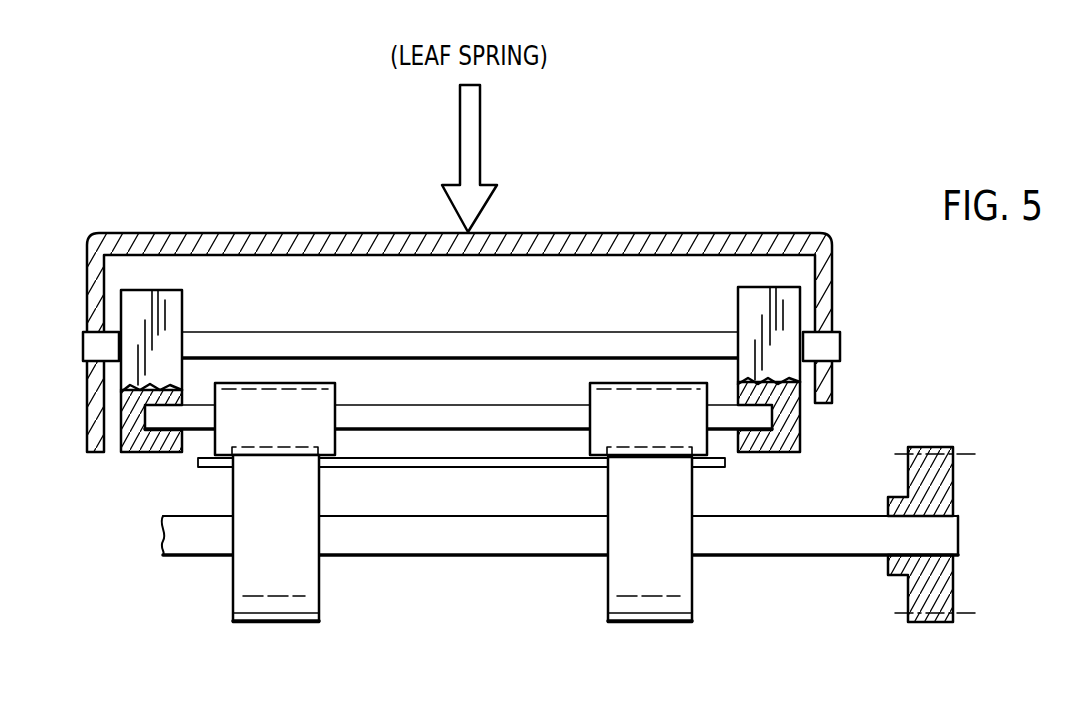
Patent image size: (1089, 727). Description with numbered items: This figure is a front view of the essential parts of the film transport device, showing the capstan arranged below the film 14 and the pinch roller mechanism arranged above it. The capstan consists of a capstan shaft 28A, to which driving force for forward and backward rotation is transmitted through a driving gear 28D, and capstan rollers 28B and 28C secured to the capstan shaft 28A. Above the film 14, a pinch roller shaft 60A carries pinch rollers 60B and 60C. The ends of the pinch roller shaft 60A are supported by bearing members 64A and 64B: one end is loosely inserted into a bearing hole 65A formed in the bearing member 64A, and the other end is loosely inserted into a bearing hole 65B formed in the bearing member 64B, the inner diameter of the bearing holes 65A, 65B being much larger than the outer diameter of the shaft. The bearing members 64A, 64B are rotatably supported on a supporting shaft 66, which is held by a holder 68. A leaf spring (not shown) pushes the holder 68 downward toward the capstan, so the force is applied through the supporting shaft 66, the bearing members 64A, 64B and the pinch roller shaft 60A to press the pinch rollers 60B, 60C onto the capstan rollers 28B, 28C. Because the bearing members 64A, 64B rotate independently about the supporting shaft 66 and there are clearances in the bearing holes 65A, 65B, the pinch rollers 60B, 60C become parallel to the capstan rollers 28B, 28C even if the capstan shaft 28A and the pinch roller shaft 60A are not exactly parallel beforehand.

The film 14 is at (220, 468).
The capstan shaft 28A is at (207, 557).
The capstan roller 28B is at (277, 608).
The capstan roller 28C is at (643, 607).
The driving gear 28D is at (953, 490).
The pinch roller shaft 60A is at (462, 405).
The pinch roller 60B is at (337, 395).
The pinch roller 60C is at (637, 383).
The bearing member 64A is at (185, 317).
The bearing member 64B is at (740, 303).
The bearing hole 65A is at (150, 453).
The bearing hole 65B is at (732, 432).
The supporting shaft 66 is at (490, 332).
The holder 68 is at (660, 232).